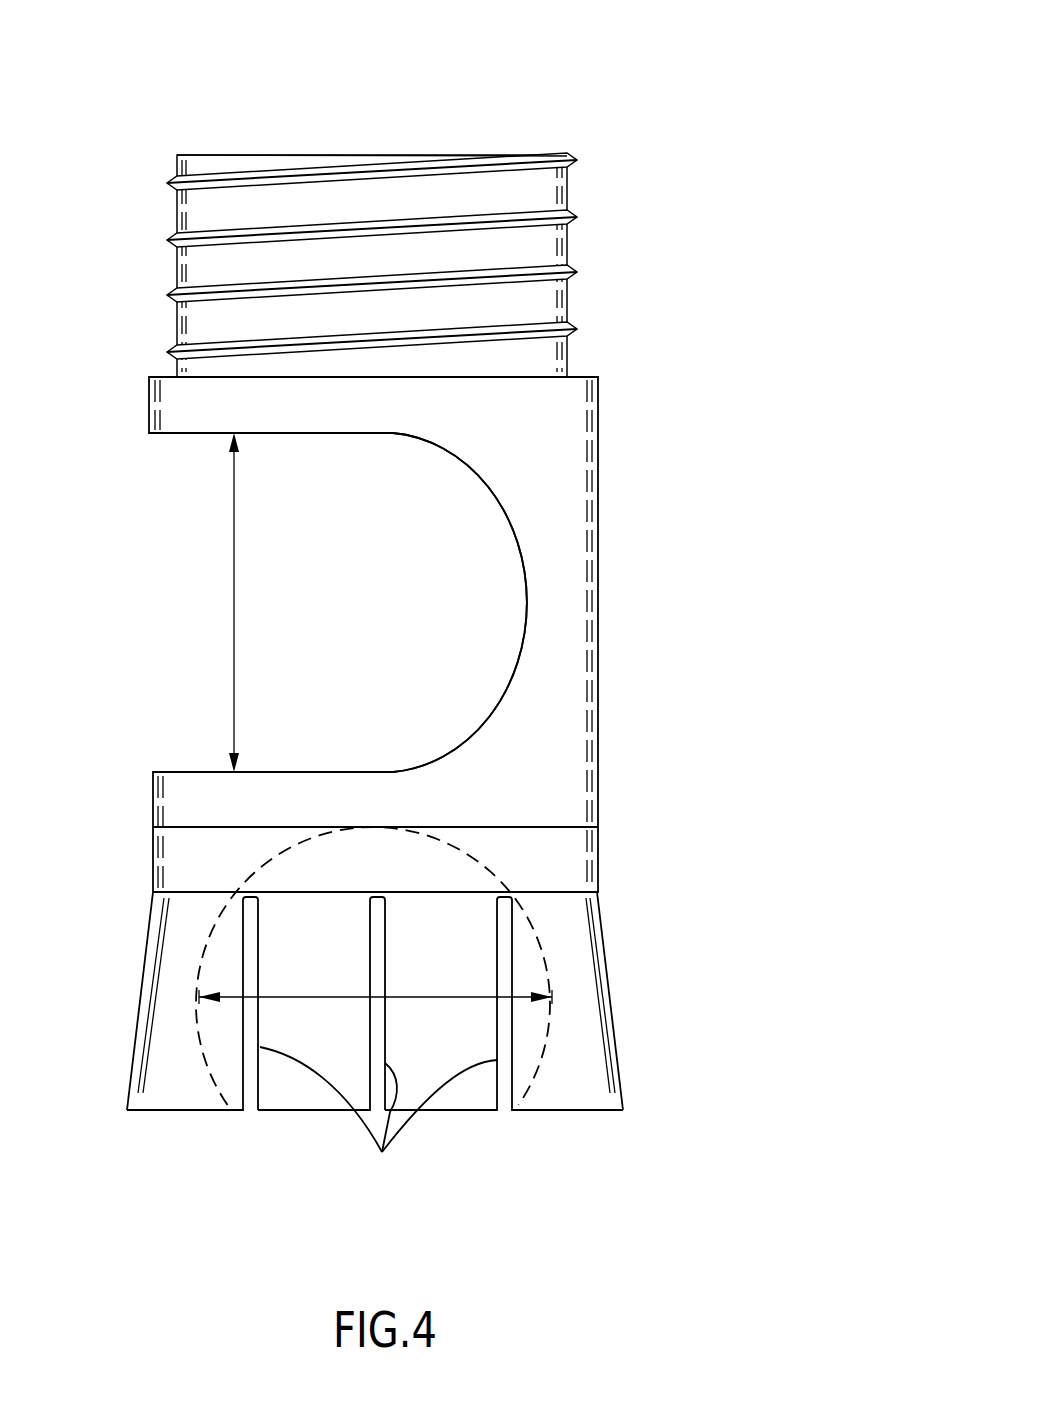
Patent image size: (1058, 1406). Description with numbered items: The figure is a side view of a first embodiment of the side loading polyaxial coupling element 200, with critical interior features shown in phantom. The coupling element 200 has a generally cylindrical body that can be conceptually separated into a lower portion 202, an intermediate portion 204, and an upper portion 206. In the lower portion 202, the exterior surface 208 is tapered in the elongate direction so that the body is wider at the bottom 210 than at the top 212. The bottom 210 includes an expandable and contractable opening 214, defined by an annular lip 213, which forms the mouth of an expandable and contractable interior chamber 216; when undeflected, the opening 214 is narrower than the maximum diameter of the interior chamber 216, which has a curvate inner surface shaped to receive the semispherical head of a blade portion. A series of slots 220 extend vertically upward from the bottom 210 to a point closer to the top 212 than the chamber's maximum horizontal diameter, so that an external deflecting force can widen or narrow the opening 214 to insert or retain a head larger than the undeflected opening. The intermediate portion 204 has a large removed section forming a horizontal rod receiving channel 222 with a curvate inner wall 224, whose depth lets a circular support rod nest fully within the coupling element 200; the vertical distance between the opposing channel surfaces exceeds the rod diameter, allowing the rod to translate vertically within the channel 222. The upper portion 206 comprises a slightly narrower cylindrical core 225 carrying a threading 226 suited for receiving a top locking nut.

The coupling element 200 is at (596, 78).
The lower portion 202 is at (732, 1033).
The intermediate portion 204 is at (650, 577).
The upper portion 206 is at (612, 245).
The exterior surface 208 is at (613, 1007).
The bottom 210 is at (558, 1112).
The top 212 is at (598, 851).
The annular lip 213 is at (223, 1105).
The opening 214 is at (310, 1112).
The interior chamber 216 is at (462, 956).
The slots 220 is at (378, 1116).
The rod receiving channel 222 is at (320, 616).
The curvate inner wall 224 is at (535, 562).
The cylindrical core 225 is at (265, 163).
The threading 226 is at (567, 157).